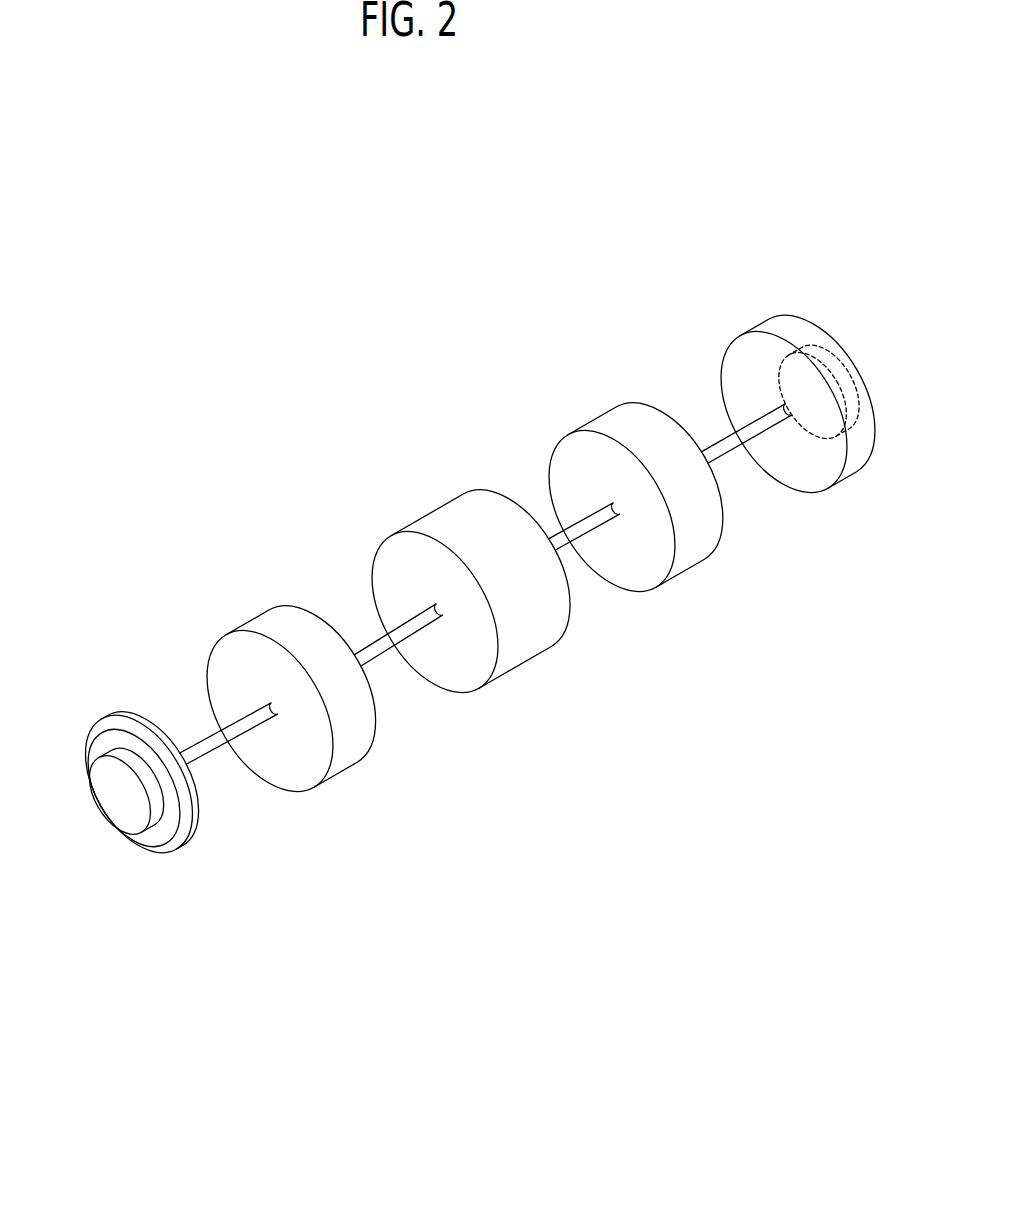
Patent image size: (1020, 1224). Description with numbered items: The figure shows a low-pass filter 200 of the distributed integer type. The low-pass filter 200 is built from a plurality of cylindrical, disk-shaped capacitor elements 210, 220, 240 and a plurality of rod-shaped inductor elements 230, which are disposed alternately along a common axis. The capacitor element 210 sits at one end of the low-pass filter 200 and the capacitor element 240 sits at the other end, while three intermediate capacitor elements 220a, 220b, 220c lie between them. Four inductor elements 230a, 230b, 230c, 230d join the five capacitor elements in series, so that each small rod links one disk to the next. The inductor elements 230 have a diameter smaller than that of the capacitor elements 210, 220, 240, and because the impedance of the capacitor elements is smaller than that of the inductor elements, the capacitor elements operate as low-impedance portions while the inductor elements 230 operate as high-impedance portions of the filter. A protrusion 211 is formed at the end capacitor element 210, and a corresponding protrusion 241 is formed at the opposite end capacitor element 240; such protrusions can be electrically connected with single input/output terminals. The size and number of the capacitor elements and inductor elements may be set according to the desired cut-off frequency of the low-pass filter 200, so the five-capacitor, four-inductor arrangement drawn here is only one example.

The low-pass filter 200 is at (95, 433).
The capacitor element 210 is at (118, 723).
The protrusion 211 is at (132, 820).
The capacitor elements 220 is at (605, 275).
The capacitor element 220a is at (275, 620).
The capacitor element 220b is at (450, 517).
The capacitor element 220c is at (613, 420).
The inductor element 230 is at (811, 645).
The inductor element 230a is at (217, 740).
The inductor element 230b is at (402, 634).
The inductor element 230c is at (598, 524).
The inductor element 230d is at (733, 440).
The capacitor element 240 is at (783, 330).
The hub of second end disc 241 is at (823, 422).